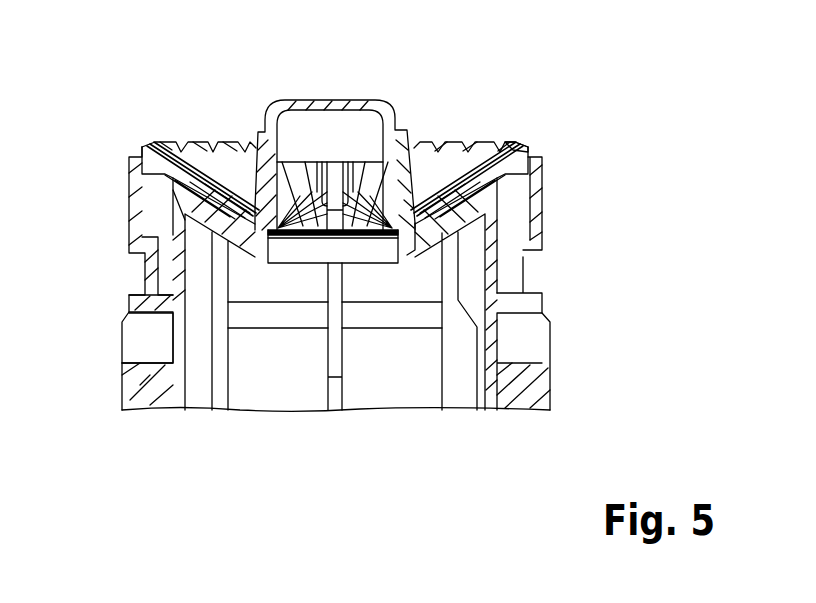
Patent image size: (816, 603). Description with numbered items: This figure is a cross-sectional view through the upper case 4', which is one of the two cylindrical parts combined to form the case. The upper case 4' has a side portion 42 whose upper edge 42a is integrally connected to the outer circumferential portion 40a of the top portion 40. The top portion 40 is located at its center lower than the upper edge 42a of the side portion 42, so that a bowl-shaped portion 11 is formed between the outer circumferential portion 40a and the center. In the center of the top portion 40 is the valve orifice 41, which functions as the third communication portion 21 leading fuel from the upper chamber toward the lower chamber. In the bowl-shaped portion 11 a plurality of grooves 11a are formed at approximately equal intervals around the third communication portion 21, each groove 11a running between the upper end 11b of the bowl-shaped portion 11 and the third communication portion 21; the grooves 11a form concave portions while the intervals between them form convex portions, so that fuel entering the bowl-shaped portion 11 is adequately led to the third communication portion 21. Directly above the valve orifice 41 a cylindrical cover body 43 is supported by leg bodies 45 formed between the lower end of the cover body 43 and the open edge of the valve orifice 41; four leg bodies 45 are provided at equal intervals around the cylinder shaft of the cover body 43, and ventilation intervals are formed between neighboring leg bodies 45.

The upper case 4' is at (106, 354).
The bowl-shaped portion 11 is at (462, 145).
The groove 11a is at (200, 148).
The upper end of the bowl-shaped portion 11b is at (144, 148).
The third communication portion 21 is at (298, 256).
The top portion 40 is at (426, 140).
The outer circumferential portion 40a is at (528, 148).
The valve orifice 41 is at (385, 256).
The side portion 42 is at (548, 384).
The upper edge of the side portion 42a is at (537, 160).
The cover body 43 is at (286, 100).
The leg body 45 is at (208, 232).